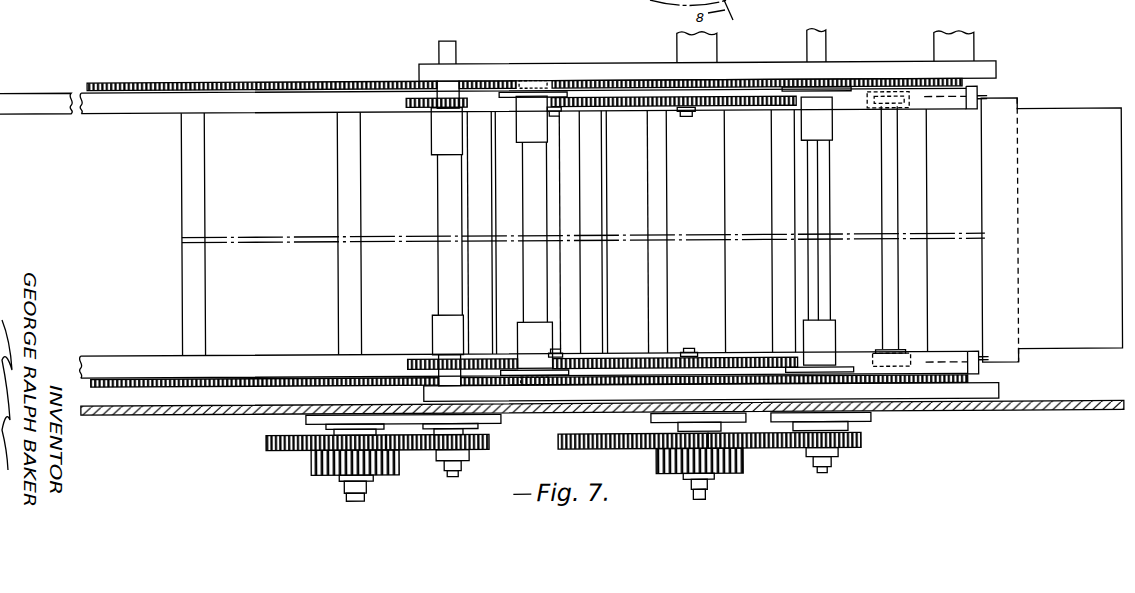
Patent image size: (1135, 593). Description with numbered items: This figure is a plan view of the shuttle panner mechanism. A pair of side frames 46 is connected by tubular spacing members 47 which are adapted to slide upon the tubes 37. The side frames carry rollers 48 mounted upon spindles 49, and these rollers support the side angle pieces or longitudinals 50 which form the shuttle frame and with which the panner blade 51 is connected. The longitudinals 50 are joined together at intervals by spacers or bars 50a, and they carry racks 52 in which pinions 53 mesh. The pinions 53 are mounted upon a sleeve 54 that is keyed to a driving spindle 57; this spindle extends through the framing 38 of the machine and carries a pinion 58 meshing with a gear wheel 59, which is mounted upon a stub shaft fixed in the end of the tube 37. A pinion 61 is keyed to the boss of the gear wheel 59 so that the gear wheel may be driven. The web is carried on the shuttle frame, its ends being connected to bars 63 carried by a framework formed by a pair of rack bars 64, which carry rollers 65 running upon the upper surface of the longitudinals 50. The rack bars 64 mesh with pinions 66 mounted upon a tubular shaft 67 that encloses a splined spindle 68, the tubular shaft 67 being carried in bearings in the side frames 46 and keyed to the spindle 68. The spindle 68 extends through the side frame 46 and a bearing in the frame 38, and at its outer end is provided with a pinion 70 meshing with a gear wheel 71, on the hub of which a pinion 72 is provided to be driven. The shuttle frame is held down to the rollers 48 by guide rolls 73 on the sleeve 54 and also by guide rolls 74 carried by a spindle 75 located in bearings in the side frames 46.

The tube 37 is at (718, 52).
The framing 38 is at (252, 416).
The side frame 46 is at (598, 68).
The tubular spacing member 47 is at (718, 194).
The roller 48 is at (906, 108).
The spindle 49 is at (556, 278).
The longitudinal 50 is at (284, 113).
The spacer 50a is at (205, 191).
The panner blade 51 is at (1051, 229).
The rack 52 is at (285, 378).
The pinion 53 is at (815, 83).
The sleeve 54 is at (831, 279).
The driving spindle 57 is at (826, 51).
The pinion 58 is at (860, 442).
The gear wheel 59 is at (641, 441).
The pinion 61 is at (743, 463).
The bar 63 is at (596, 194).
The rack bar 64 is at (628, 358).
The roller 65 is at (556, 118).
The pinion 66 is at (418, 106).
The tubular shaft 67 is at (443, 277).
The splined spindle 68 is at (457, 55).
The pinion 70 is at (484, 451).
The gear wheel 71 is at (265, 444).
The pinion 72 is at (312, 466).
The guide roll 73 is at (840, 102).
The guide roll 74 is at (508, 97).
The spindle 75 is at (528, 268).